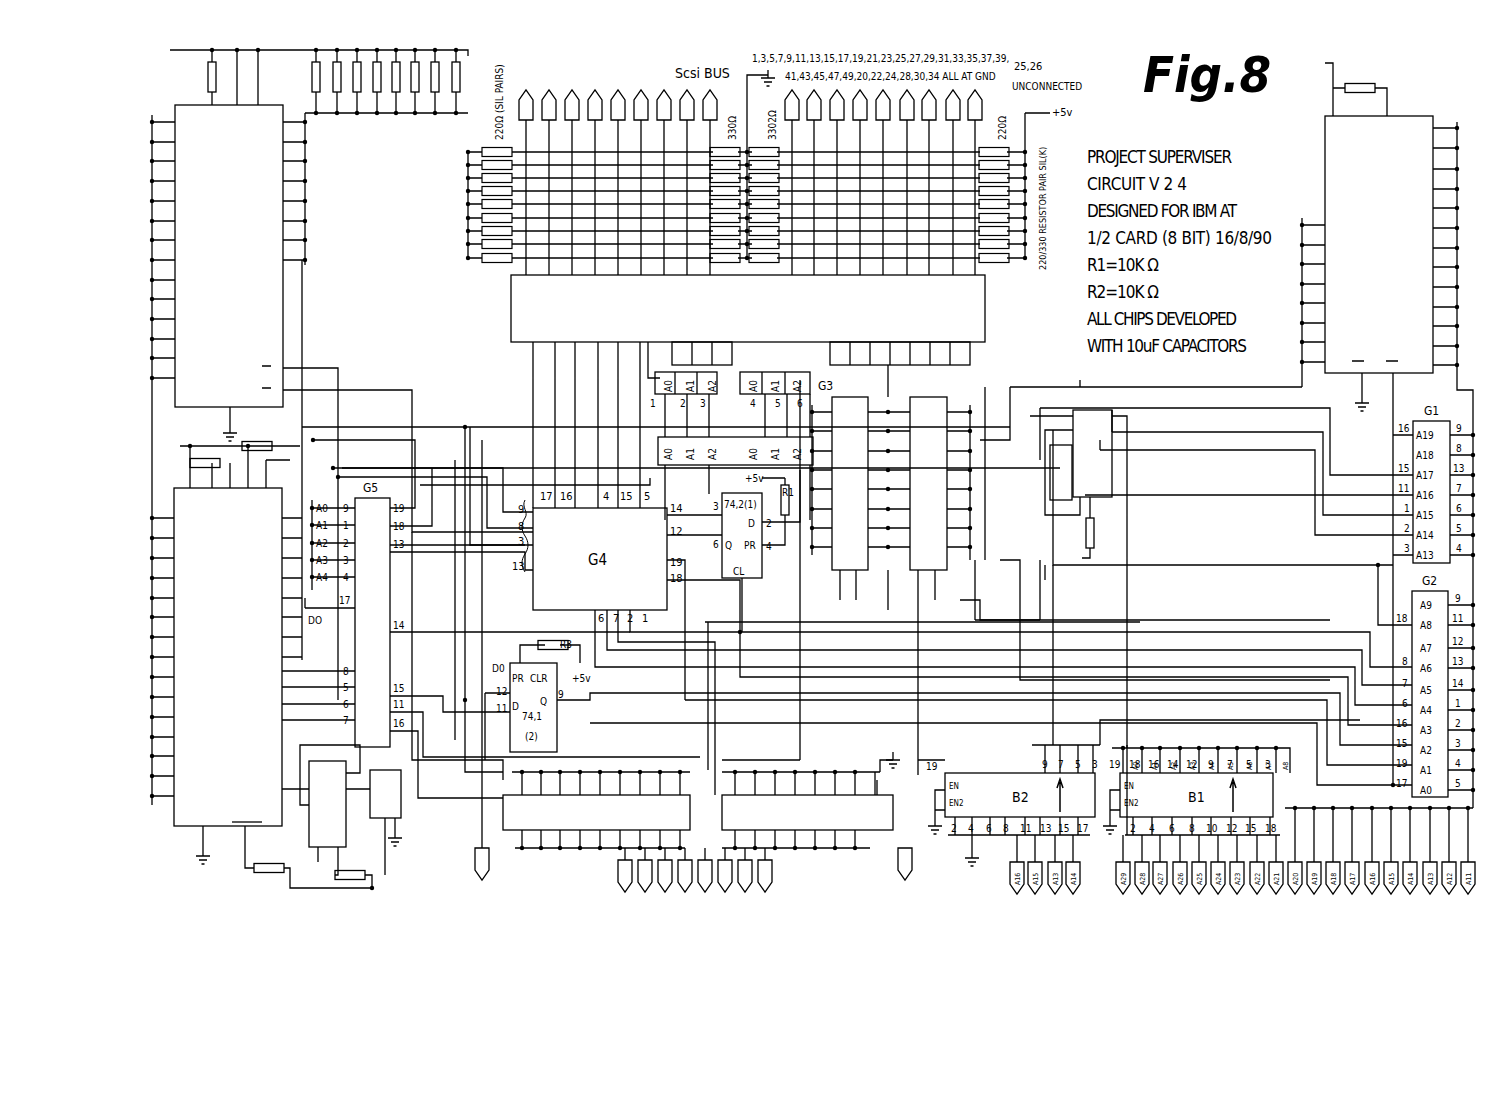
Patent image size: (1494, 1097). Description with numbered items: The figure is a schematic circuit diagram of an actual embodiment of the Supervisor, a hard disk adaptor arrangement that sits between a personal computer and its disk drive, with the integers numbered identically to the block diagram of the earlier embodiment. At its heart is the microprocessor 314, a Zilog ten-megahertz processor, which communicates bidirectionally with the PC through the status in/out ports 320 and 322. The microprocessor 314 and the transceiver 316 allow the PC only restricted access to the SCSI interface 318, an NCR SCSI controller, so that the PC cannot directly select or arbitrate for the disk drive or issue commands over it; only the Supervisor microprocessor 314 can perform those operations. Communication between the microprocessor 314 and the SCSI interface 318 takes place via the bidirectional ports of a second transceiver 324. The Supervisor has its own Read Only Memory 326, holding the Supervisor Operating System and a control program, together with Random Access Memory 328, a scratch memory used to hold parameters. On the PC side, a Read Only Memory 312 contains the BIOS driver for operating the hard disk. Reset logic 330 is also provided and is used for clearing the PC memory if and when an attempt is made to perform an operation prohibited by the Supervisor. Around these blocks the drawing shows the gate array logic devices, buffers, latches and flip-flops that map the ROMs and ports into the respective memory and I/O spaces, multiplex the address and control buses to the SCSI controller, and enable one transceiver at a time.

The Read Only Memory (ROM) 326 is at (288, 300).
The SCSI interface 318 is at (990, 318).
The status in/out port 322 is at (1070, 410).
The transceiver 316 is at (950, 567).
The second transceiver 324 is at (880, 582).
The status in/out port 320 is at (500, 852).
The microprocessor 314 is at (267, 668).
The Random Access Memory (RAM) 328 is at (186, 828).
The reset logic 330 is at (1387, 431).
The Read Only Memory (ROM) 312 is at (1410, 113).